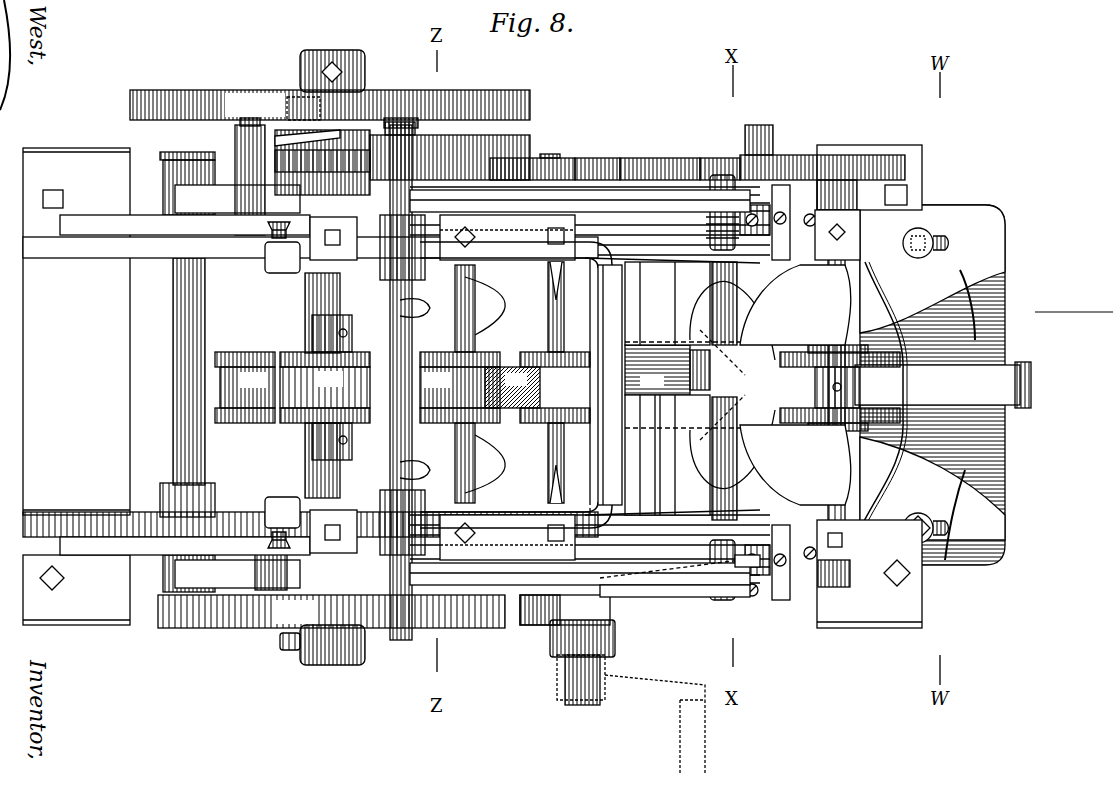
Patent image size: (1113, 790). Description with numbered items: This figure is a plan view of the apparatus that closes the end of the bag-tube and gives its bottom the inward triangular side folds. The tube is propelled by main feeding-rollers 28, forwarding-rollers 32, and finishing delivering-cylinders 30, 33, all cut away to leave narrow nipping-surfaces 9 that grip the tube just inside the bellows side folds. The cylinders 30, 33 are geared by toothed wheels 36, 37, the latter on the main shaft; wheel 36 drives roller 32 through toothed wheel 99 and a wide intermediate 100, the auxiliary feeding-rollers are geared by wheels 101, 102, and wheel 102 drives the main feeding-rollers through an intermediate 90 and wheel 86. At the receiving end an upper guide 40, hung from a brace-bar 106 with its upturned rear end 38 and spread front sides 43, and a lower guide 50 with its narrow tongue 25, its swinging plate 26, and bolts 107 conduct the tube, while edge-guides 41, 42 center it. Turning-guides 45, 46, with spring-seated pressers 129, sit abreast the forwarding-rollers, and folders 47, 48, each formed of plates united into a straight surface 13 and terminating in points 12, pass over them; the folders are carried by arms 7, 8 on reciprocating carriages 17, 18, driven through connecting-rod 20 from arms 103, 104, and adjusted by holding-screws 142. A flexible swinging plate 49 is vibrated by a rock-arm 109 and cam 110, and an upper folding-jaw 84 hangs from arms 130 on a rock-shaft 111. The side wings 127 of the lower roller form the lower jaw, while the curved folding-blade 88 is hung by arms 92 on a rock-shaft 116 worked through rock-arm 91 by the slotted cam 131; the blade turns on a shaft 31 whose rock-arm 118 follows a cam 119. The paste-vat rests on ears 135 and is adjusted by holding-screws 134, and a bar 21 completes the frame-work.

The arm 7 is at (781, 392).
The arm 8 is at (765, 547).
The nipping-surfaces 9 is at (557, 388).
The points 12 is at (676, 342).
The straight surface 13 is at (795, 395).
The reciprocating carriage 17 is at (778, 214).
The reciprocating carriage 18 is at (804, 560).
The connecting-rod 20 is at (754, 580).
The bar 21 is at (331, 611).
The tongue 25 is at (512, 387).
The swinging plate 26 is at (667, 370).
The main feeding-roller 28 is at (872, 358).
The finishing delivering-cylinder 30 is at (325, 387).
The shaft 31 is at (722, 387).
The forwarding-roller 32 is at (460, 387).
The finishing delivering-cylinder 33 is at (247, 387).
The toothed wheel 36 is at (332, 158).
The toothed wheel 37 is at (218, 163).
The upturned rear end 38 is at (1031, 384).
The upper guide 40 is at (937, 385).
The edge-guide 41 is at (932, 269).
The edge-guide 42 is at (932, 488).
The spread and upturned front end 43 is at (710, 310).
The turning-guide 45 is at (487, 306).
The turning-guide 46 is at (485, 464).
The folder 47 is at (795, 305).
The folder 48 is at (795, 465).
The flexible swinging plate 49 is at (672, 386).
The lower guide 50 is at (932, 385).
The upper swinging folding-jaw 84 is at (606, 385).
The toothed wheel 86 is at (800, 157).
The folding-blade 88 is at (738, 400).
The intermediate 90 is at (718, 158).
The rock-arm 91 is at (194, 213).
The arms 92 is at (580, 387).
The toothed wheel 99 is at (532, 157).
The wide intermediate 100 is at (432, 144).
The toothed wheel 101 is at (581, 157).
The toothed wheel 102 is at (644, 158).
The arm 103 is at (237, 199).
The arm 104 is at (231, 573).
The brace-bar 106 is at (906, 384).
The bolts 107 is at (916, 250).
The rock-arm 109 is at (680, 585).
The cam 110 is at (612, 685).
The rock-shaft 111 is at (402, 379).
The rock-shaft 116 is at (386, 296).
The rock-arm 118 is at (734, 558).
The cam 119 is at (670, 566).
The wings 127 is at (283, 293).
The spring-seated presser 129 is at (437, 384).
The arms 130 is at (516, 385).
The slotted cam 131 is at (330, 105).
The holding-screws 134 is at (266, 234).
The ears 135 is at (420, 387).
The holding-screws 142 is at (781, 396).